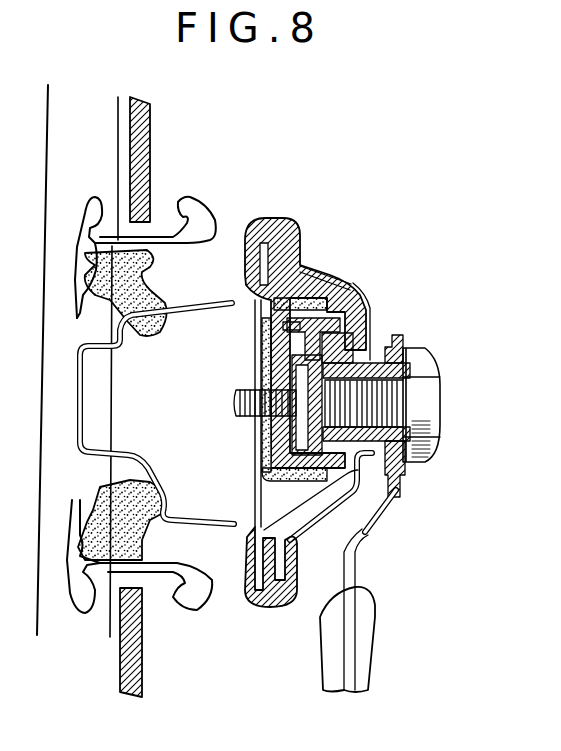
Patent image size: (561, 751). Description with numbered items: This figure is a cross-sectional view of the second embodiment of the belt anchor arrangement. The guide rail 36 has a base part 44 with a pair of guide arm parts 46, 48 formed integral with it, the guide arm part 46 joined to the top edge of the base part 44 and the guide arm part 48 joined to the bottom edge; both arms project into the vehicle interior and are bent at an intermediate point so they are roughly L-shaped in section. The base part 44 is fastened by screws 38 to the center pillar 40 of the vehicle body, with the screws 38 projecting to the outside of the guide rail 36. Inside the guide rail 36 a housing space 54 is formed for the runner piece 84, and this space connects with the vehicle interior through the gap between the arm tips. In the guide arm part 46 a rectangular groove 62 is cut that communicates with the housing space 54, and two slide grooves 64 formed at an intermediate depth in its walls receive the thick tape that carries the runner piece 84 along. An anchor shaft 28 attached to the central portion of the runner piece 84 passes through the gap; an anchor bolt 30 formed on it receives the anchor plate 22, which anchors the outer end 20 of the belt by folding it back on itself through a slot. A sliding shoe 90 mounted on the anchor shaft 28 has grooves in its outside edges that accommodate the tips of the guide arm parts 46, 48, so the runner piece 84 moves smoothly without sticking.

The outer end 20 is at (378, 637).
The anchor plate 22 is at (370, 539).
The anchor shaft 28 is at (370, 352).
The anchor bolt 30 is at (440, 377).
The guide rail 36 is at (350, 307).
The screws 38 is at (234, 403).
The center pillar 40 is at (328, 510).
The base part 44 is at (263, 337).
The guide arm part 46 is at (314, 310).
The guide arm part 48 is at (287, 479).
The housing space 54 is at (293, 357).
The rectangular groove 62 is at (318, 325).
The slide grooves 64 is at (287, 327).
The runner piece 84 is at (270, 460).
The sliding shoe 90 is at (403, 469).